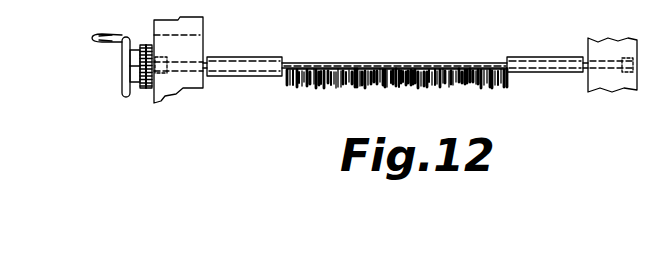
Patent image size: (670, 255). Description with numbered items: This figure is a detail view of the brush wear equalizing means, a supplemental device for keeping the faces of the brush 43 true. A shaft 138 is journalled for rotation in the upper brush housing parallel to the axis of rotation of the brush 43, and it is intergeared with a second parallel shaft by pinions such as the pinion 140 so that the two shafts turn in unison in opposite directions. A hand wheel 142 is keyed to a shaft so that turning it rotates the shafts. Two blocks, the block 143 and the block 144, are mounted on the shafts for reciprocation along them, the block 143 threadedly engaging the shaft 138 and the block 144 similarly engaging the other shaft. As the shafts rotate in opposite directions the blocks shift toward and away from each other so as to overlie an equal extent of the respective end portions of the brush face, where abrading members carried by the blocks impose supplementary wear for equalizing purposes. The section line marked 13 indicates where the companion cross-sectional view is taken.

The hand wheel 142 is at (95, 38).
The pinion 140 is at (147, 45).
The block 143 is at (234, 57).
The brush 43 is at (286, 82).
The shaft 138 is at (438, 63).
The block 144 is at (539, 57).
The section line 13- 13 is at (345, 63).